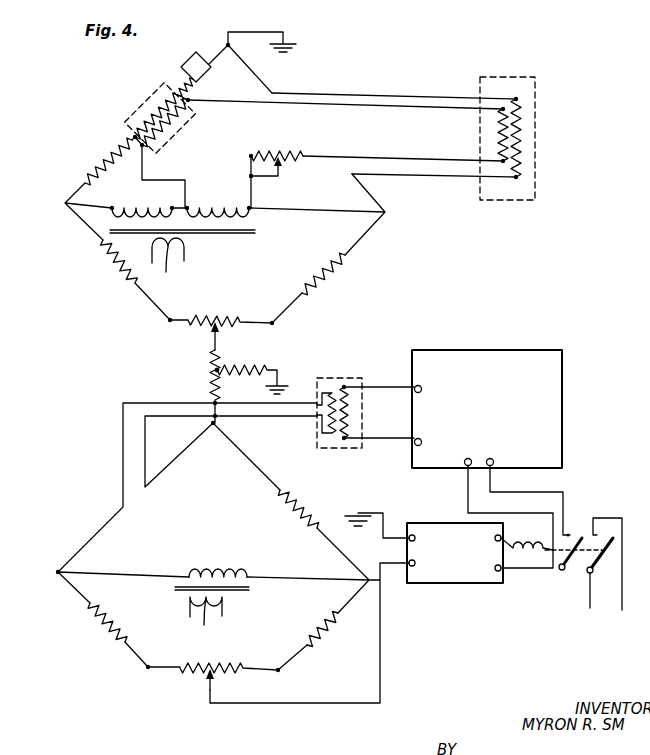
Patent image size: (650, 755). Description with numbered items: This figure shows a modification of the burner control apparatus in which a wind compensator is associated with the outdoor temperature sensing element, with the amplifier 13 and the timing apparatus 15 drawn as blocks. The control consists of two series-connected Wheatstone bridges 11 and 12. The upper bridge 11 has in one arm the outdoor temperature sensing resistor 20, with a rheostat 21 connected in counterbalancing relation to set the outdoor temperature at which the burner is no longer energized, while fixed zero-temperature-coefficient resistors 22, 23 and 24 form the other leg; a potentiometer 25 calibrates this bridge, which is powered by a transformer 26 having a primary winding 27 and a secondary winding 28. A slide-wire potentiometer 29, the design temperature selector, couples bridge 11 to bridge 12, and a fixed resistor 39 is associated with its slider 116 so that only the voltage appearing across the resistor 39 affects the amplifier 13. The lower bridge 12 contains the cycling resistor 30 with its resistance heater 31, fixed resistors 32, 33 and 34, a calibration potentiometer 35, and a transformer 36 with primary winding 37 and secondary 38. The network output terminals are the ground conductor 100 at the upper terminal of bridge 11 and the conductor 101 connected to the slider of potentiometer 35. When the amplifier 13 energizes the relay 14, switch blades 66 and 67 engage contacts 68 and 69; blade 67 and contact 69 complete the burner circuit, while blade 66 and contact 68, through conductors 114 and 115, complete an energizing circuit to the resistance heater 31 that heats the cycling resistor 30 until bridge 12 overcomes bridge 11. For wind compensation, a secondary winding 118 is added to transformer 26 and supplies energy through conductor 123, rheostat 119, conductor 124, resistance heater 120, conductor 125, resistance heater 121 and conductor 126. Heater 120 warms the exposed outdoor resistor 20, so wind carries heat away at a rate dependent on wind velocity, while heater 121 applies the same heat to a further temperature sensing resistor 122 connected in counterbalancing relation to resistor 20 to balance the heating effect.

The Wheatstone bridge 11 is at (248, 125).
The Wheatstone bridge 12 is at (215, 512).
The amplifier 13 is at (425, 522).
The relay 14 is at (541, 534).
The timing apparatus 15 is at (542, 380).
The outdoor temperature sensing resistor 20 is at (536, 137).
The rheostat 21 is at (183, 58).
The fixed resistor 22 is at (100, 165).
The fixed resistor 23 is at (118, 272).
The fixed resistor 24 is at (326, 275).
The potentiometer 25 is at (224, 318).
The transformer 26 is at (197, 246).
The primary winding 27 is at (169, 262).
The secondary winding 28 is at (152, 208).
The potentiometer 29 is at (211, 378).
The cycling resistor 30 is at (333, 416).
The resistance heater 31 is at (347, 411).
The fixed resistor 32 is at (297, 501).
The fixed resistor 33 is at (326, 630).
The fixed resistor 34 is at (105, 626).
The potentiometer 35 is at (218, 665).
The transformer 36 is at (258, 591).
The primary winding 37 is at (206, 621).
The secondary 38 is at (216, 568).
The fixed resistor 39 is at (258, 366).
The switch blade 66 is at (576, 556).
The switch blade 67 is at (601, 562).
The switch contact 68 is at (572, 528).
The switch contact 69 is at (603, 527).
The ground conductor 100 is at (286, 43).
The conductor 101 is at (287, 704).
The conductor 114 is at (468, 476).
The conductor 115 is at (540, 492).
The slider 116 is at (223, 365).
The secondary winding 118 is at (222, 207).
The rheostat 119 is at (294, 161).
The resistance heater 120 is at (500, 134).
The resistance heater 121 is at (168, 126).
The temperature sensing resistor 122 is at (152, 108).
The conductor 123 is at (253, 193).
The conductor 124 is at (400, 158).
The conductor 125 is at (391, 107).
The conductor 126 is at (171, 179).